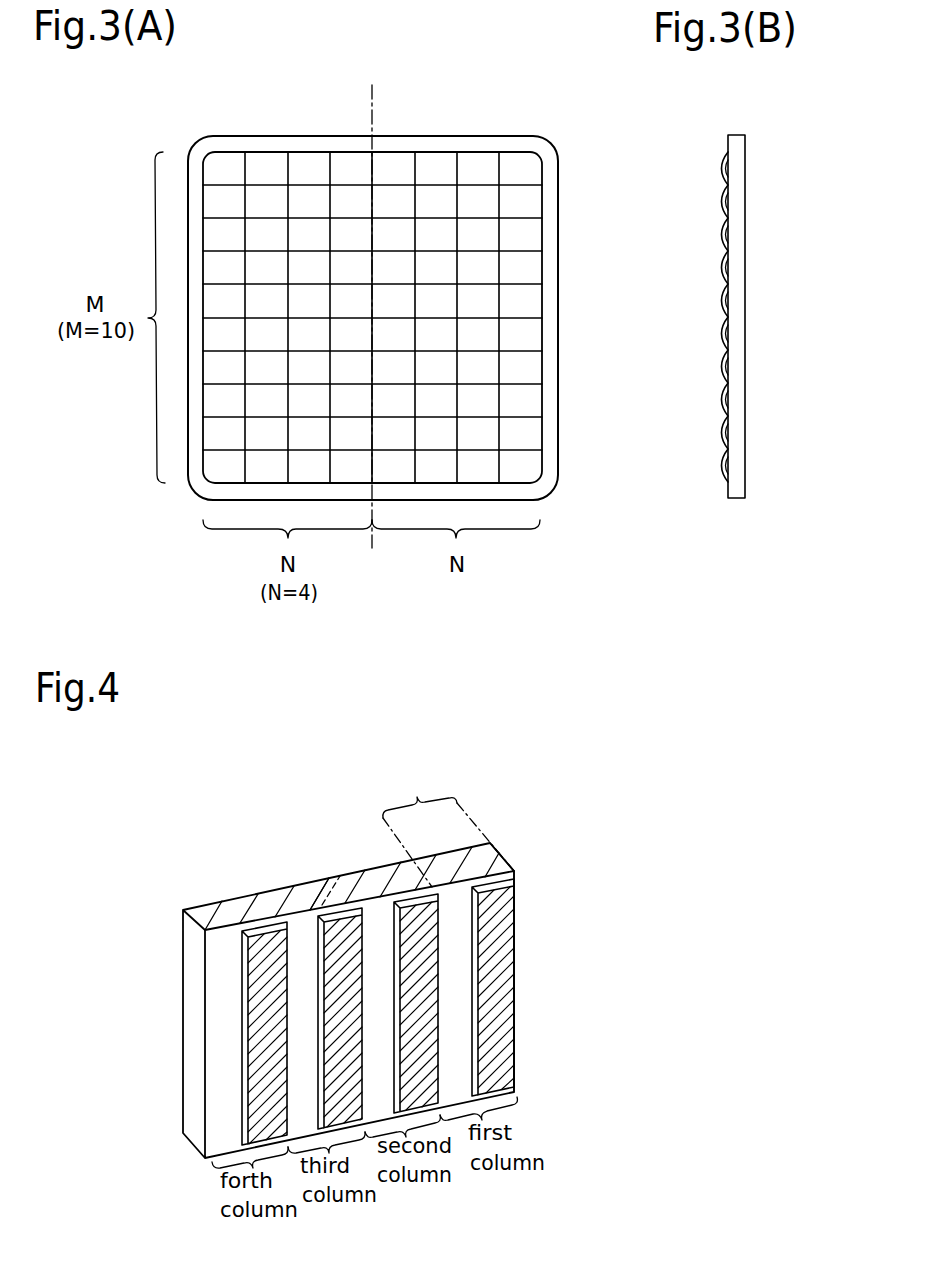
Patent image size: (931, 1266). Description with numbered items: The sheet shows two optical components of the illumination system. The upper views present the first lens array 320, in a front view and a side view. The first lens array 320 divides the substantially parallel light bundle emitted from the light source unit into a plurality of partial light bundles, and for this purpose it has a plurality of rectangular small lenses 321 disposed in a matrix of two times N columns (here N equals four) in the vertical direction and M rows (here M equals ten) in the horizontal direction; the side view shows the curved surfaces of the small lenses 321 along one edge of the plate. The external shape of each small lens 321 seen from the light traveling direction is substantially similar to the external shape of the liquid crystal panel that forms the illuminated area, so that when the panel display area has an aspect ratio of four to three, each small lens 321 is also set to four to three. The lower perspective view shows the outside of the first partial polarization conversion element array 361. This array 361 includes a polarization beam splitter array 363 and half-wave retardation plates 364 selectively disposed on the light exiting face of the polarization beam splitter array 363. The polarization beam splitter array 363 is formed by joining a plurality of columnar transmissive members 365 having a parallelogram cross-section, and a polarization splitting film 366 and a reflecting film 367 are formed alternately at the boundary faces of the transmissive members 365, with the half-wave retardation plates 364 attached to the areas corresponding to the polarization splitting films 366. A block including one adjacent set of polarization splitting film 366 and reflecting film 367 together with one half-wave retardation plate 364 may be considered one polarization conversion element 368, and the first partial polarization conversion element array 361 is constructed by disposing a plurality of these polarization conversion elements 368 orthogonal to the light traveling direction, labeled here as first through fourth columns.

In FIG. 3A, the first lens array 320 is at (534, 92).
In FIG. 3A, the small lens 321 is at (528, 465).
In FIG. 3B, the small lens 321 is at (725, 438).
In FIG. 4, the first partial polarization conversion element array 361 is at (397, 936).
In FIG. 4, the polarization beam splitter array 363 is at (524, 857).
In FIG. 4, the λ/2 retardation plate 364 is at (515, 1055).
In FIG. 4, the transmissive member 365 is at (310, 892).
In FIG. 4, the polarization splitting film 366 is at (322, 905).
In FIG. 4, the reflecting film 367 is at (280, 893).
In FIG. 4, the polarization conversion element 368 is at (448, 830).